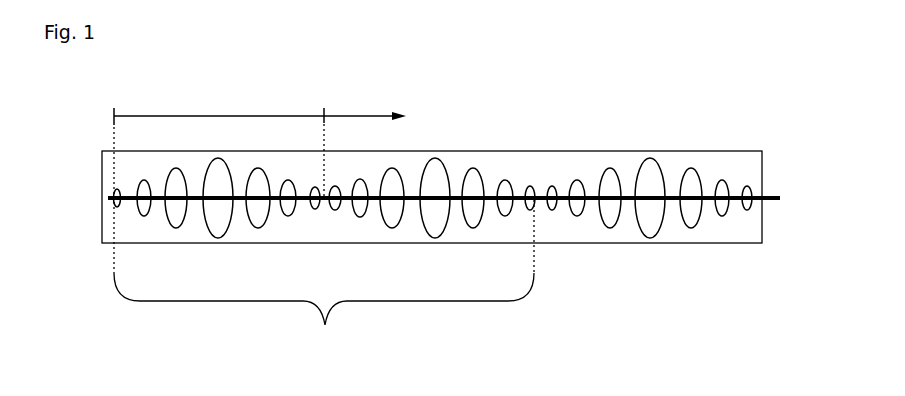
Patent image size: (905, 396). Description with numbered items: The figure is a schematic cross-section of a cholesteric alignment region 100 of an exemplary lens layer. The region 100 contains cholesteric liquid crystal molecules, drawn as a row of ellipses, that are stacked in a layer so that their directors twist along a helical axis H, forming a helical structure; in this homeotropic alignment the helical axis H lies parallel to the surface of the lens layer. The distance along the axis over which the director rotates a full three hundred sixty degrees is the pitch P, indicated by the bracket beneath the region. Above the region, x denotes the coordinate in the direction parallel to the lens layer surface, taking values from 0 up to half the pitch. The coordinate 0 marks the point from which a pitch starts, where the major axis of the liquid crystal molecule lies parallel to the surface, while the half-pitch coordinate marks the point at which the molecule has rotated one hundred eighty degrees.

The cholesteric alignment region 100 is at (424, 197).
The helical axis H is at (455, 198).
The pitch P is at (324, 279).
The coordinate x is at (269, 141).
The pitch starting point coordinate 0 is at (116, 178).